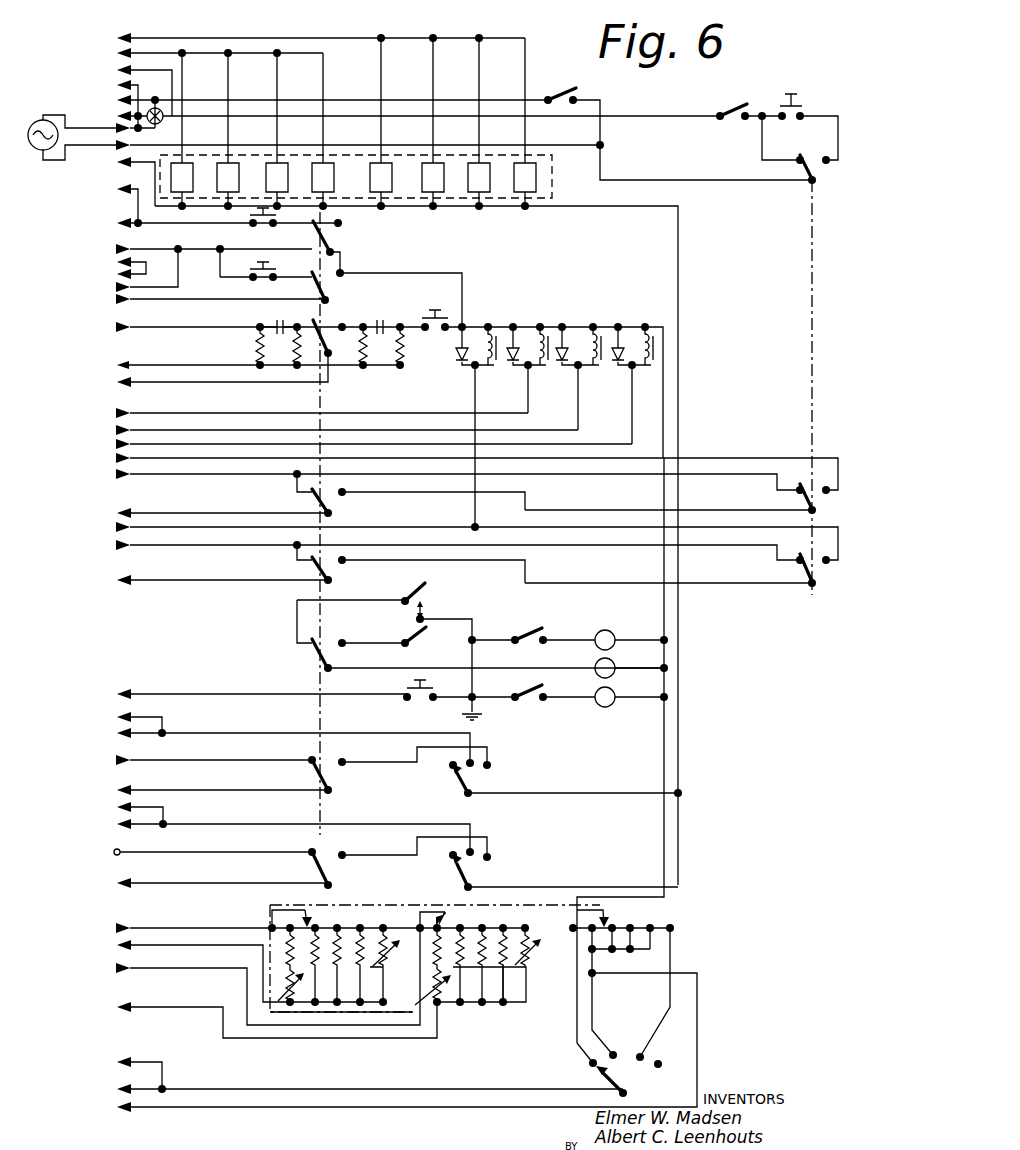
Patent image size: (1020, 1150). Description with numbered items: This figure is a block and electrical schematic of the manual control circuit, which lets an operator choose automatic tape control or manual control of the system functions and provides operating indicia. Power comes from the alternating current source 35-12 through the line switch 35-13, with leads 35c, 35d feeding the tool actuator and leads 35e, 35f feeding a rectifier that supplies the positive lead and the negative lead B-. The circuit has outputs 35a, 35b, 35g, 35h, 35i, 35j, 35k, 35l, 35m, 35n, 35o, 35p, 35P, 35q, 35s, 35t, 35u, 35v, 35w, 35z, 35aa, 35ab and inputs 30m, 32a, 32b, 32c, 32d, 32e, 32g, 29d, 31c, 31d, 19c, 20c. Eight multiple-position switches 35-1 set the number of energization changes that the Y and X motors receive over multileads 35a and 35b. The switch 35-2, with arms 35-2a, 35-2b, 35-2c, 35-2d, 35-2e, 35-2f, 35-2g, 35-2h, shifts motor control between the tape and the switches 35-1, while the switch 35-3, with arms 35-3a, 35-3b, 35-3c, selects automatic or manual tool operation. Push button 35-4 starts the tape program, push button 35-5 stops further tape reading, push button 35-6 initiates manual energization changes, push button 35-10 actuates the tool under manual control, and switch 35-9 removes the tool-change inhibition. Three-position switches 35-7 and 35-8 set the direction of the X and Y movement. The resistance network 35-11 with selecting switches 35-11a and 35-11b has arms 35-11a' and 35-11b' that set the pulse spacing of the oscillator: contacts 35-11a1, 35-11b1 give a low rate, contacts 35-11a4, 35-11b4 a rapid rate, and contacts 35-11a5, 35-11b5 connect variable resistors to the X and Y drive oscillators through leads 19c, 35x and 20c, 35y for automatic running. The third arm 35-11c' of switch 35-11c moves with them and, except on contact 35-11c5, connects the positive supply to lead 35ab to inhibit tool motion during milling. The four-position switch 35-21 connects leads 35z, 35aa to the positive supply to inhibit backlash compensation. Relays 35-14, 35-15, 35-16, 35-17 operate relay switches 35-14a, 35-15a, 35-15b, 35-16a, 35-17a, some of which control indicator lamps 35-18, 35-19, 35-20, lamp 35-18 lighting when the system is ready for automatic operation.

The output lead 35a is at (117, 38).
The output lead 35b is at (117, 53).
The power lead 35c is at (117, 70).
The power lead 35d is at (117, 85).
The power lead 35e is at (117, 100).
The power lead 35f is at (117, 116).
The output lead 35g is at (117, 162).
The output lead 35h is at (117, 189).
The output lead 35i is at (117, 223).
The output lead 35j is at (117, 262).
The output lead 35k is at (117, 274).
The output lead 35l is at (116, 287).
The output lead 35m is at (116, 299).
The input lead 30m is at (116, 327).
The B- lead B- is at (117, 365).
The output lead 35n is at (117, 382).
The input lead 32c is at (116, 413).
The input lead 32e is at (116, 430).
The input lead 29d is at (116, 444).
The input lead 32a is at (116, 458).
The input lead 32b is at (116, 474).
The output lead 35o is at (117, 513).
The input lead 32g is at (116, 528).
The input lead 32d is at (116, 545).
The output lead 35p is at (117, 580).
The output lead 35q is at (117, 694).
The output lead 35P is at (117, 717).
The output lead 35s is at (117, 733).
The input lead 31c is at (116, 760).
The output lead 35t is at (117, 790).
The output lead 35u is at (117, 807).
The output lead 35v is at (117, 824).
The input lead 31d is at (112, 853).
The output lead 35w is at (117, 883).
The lead 19c is at (116, 928).
The lead 35x is at (117, 945).
The lead 20c is at (116, 968).
The lead 35y is at (117, 1007).
The lead 35z is at (117, 1062).
The lead 35aa is at (117, 1089).
The lead 35ab is at (117, 1107).
The source of alternating current 35-12 is at (45, 152).
The multiple position switches 35-1 is at (552, 180).
The line switch 35-13 is at (556, 96).
The relay switch 35-15a is at (733, 100).
The push button switch 35-10 is at (803, 99).
The switch arm 35-3c is at (800, 181).
The multiple switch 35-3 is at (810, 370).
The switch arm 35-3b is at (797, 493).
The switch arm 35-3a is at (800, 567).
The push switch 35-4 is at (258, 228).
The push button switch 35-5 is at (255, 281).
The manually operated switch 35-2 is at (320, 810).
The switch arm 35-2h is at (334, 241).
The switch arm 35-2g is at (327, 289).
The switch arm 35-2f is at (330, 360).
The push button switch 35-6 is at (447, 323).
The relay 35-14 is at (471, 335).
The relay 35-15 is at (526, 335).
The relay 35-16 is at (580, 335).
The relay 35-17 is at (627, 333).
The switch arm 35-2e is at (332, 510).
The switch arm 35-2d is at (332, 578).
The switch arm 35-2c is at (315, 654).
The relay switch 35-15b is at (428, 589).
The relay switch 35-14a is at (416, 638).
The relay switch 35-17a is at (552, 624).
The indicator lamp 35-18 is at (608, 630).
The indicator lamp 35-19 is at (613, 663).
The indicator lamp 35-20 is at (613, 695).
The switch 35-9 is at (405, 691).
The relay switch 35-16a is at (529, 706).
The switch arm 35-2b is at (331, 785).
The three-position switch 35-7 is at (472, 792).
The switch arm 35-2a is at (331, 878).
The three-position switch 35-8 is at (472, 878).
The selecting switch 35-11a is at (415, 939).
The switch arm 35-11a' is at (283, 909).
The contact 35-11a1 is at (288, 927).
The contact 35-11a4 is at (346, 932).
The contact 35-11a5 is at (392, 930).
The selector switch 35-11b is at (517, 936).
The switch arm 35-11b' is at (481, 908).
The contact 35-11b1 is at (437, 932).
The contact 35-11b4 is at (488, 1005).
The contact 35-11b5 is at (530, 932).
The resistance network 35-11 is at (465, 1010).
The switch 35-11c is at (670, 996).
The switch arm 35-11c' is at (652, 912).
The contact 35-11c5 is at (672, 928).
The switch 35-21 is at (606, 1073).